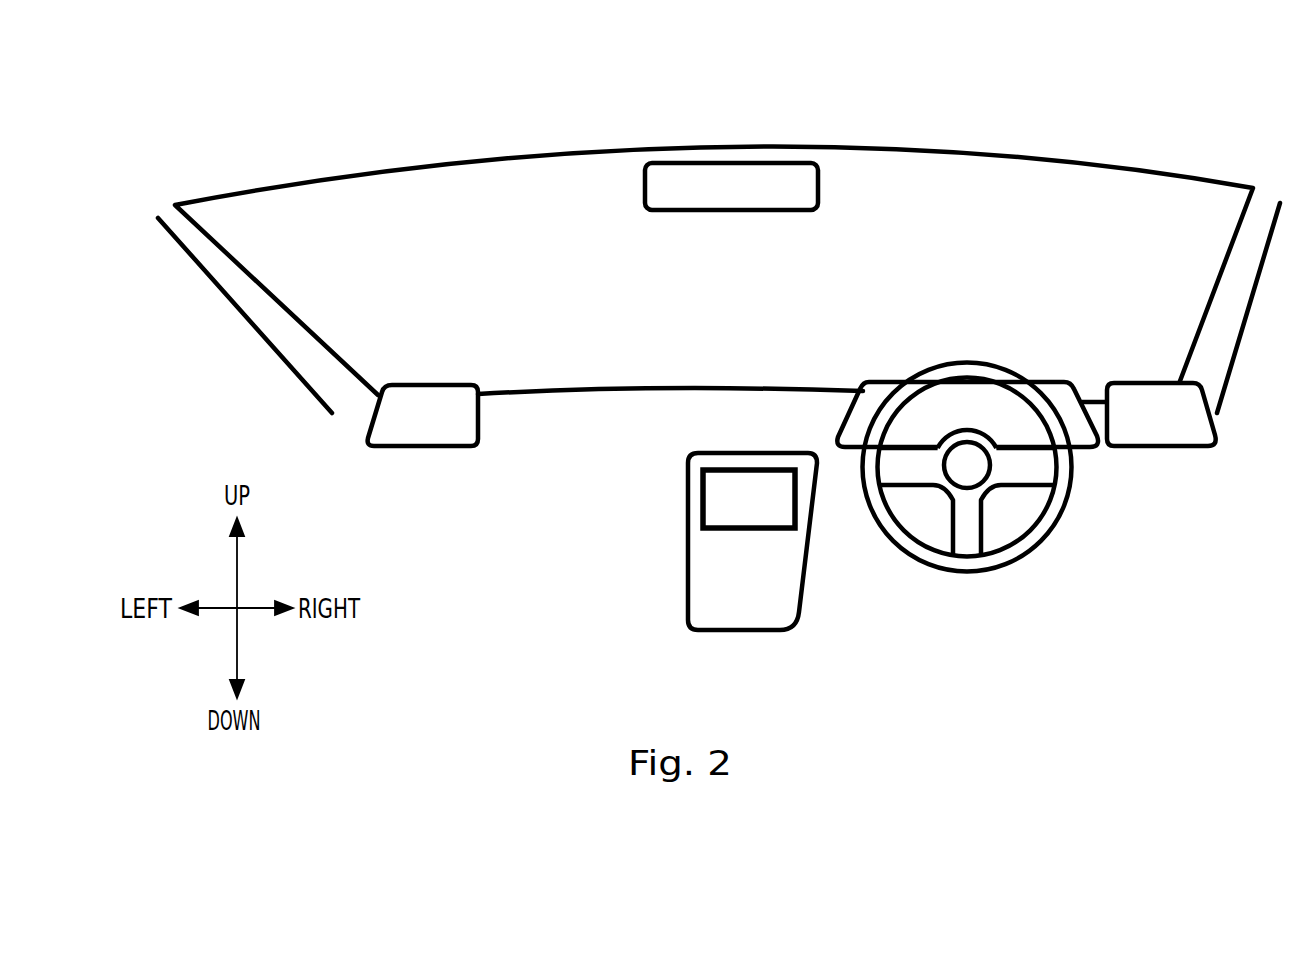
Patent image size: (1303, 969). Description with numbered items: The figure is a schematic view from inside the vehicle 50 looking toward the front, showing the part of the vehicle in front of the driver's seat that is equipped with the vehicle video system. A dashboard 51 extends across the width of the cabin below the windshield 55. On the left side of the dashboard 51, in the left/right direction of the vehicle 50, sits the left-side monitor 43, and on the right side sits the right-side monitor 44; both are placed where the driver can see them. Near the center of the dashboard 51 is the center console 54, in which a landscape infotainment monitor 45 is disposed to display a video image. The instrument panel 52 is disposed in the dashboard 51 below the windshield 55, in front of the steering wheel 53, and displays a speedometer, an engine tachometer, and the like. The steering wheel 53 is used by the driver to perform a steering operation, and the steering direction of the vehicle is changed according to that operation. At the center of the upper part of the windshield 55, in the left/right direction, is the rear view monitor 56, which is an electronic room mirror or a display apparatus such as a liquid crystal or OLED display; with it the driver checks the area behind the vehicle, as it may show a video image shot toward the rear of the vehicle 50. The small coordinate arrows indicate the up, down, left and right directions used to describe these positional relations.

The vehicle 50 is at (1208, 63).
The left-side monitor 43 is at (440, 407).
The right-side monitor 44 is at (1141, 397).
The infotainment monitor 45 is at (712, 492).
The dashboard 51 is at (650, 411).
The instrument panel 52 is at (1057, 400).
The steering wheel 53 is at (1042, 525).
The center console 54 is at (792, 582).
The windshield 55 is at (1096, 190).
The rear view monitor 56 is at (733, 178).